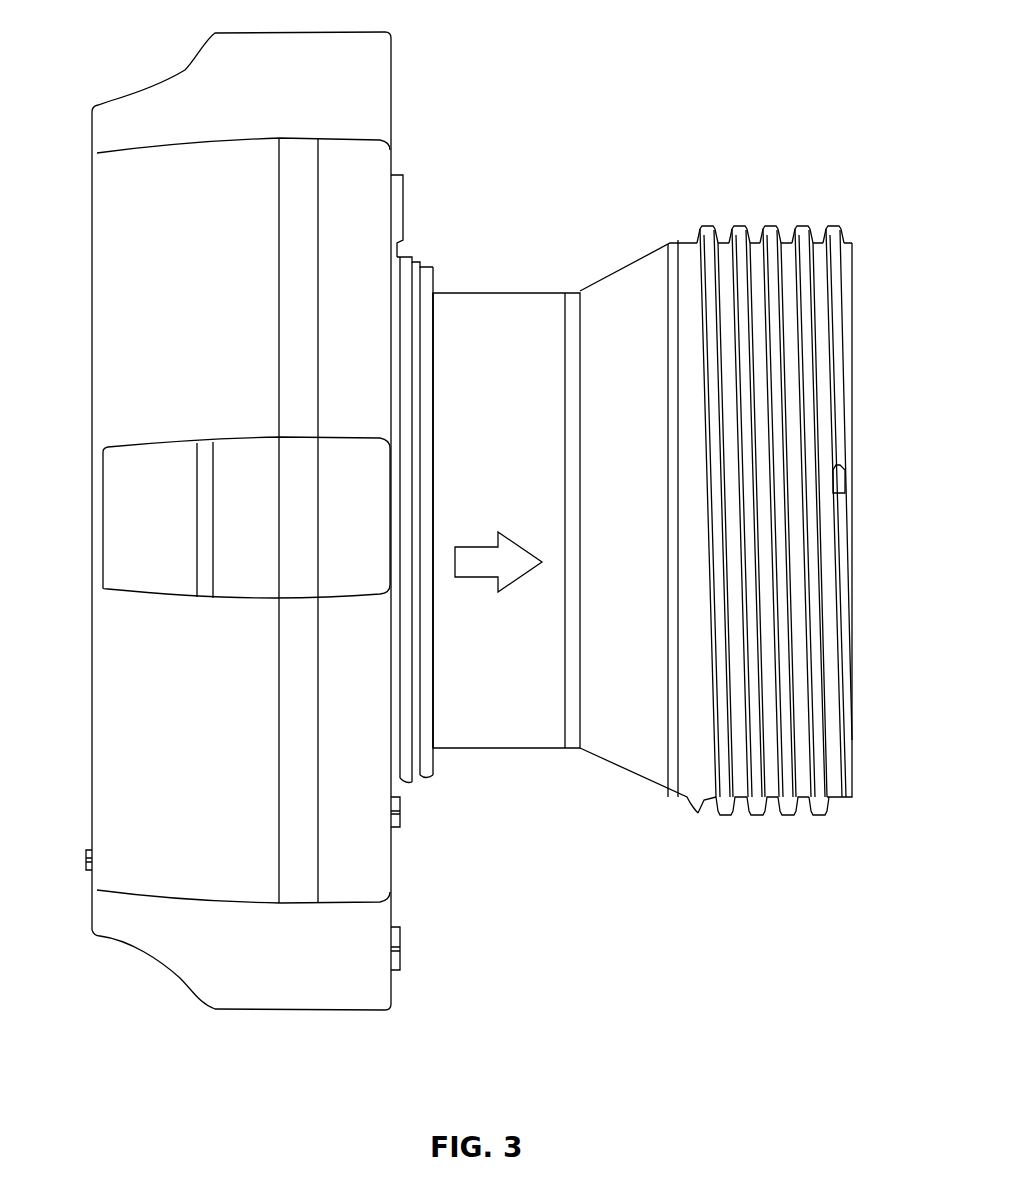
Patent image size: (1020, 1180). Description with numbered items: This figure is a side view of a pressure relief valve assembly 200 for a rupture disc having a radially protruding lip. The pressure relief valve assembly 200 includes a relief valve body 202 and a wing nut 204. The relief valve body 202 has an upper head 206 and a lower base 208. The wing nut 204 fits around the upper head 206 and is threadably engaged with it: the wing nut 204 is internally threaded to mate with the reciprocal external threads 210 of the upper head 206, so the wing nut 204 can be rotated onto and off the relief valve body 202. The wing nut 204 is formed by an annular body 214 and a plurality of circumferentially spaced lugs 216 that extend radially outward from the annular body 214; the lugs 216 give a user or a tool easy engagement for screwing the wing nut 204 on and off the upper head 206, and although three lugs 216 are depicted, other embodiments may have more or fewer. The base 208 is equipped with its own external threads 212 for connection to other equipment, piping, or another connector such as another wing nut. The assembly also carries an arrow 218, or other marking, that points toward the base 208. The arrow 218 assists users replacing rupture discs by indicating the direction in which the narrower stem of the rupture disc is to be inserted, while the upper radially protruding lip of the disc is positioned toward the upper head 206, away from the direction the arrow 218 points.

The pressure relief valve assembly 200 is at (683, 117).
The relief valve body 202 is at (516, 292).
The wing nut 204 is at (142, 92).
The upper head 206 is at (433, 618).
The lower base 208 is at (803, 226).
The external threads 210 is at (413, 384).
The external threads 212 is at (803, 488).
The annular body 214 is at (192, 710).
The lugs 216 is at (240, 556).
The arrow 218 is at (525, 565).